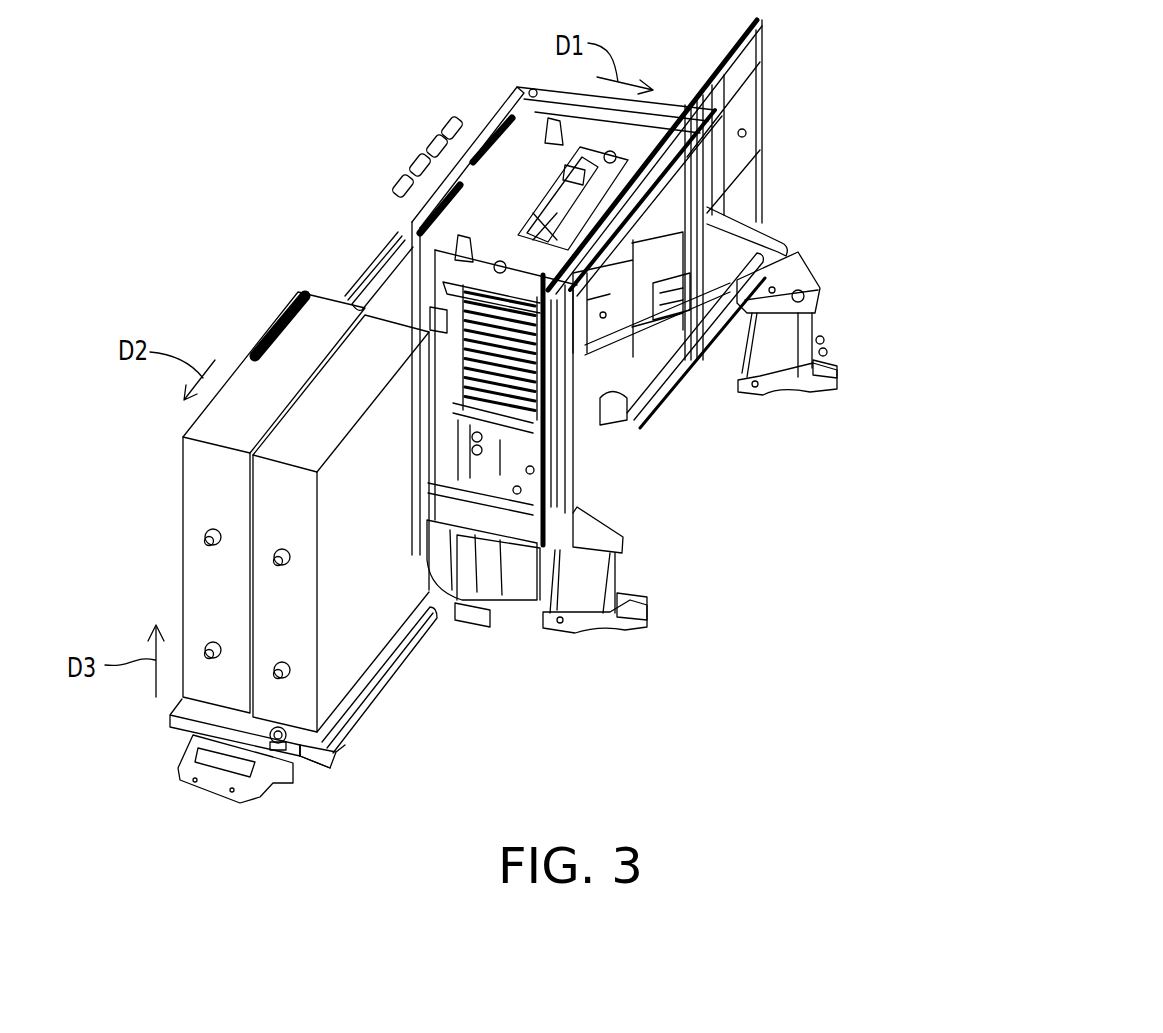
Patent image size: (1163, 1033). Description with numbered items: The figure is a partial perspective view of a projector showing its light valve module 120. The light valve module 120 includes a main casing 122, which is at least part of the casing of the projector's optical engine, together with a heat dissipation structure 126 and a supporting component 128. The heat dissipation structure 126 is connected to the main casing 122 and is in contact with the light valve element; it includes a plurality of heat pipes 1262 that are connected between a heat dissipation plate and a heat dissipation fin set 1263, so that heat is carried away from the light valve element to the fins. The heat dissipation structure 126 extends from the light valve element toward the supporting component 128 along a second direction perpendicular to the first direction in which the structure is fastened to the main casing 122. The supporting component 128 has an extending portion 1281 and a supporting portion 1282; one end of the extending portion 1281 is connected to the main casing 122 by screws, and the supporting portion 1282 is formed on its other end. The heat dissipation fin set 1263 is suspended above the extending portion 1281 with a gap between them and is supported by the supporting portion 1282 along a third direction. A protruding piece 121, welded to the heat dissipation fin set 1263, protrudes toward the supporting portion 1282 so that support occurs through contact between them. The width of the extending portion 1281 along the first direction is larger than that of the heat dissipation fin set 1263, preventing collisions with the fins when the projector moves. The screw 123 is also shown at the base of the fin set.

The light valve module 120 is at (1139, 770).
The protruding piece 121 is at (192, 717).
The main casing 122 is at (745, 40).
The screw 123 is at (278, 727).
The heat dissipation structure 126 is at (375, 268).
The heat pipes 1262 is at (370, 282).
The heat dissipation fin set 1263 is at (358, 612).
The supporting component 128 is at (368, 843).
The extending portion 1281 is at (337, 740).
The supporting portion 1282 is at (282, 760).